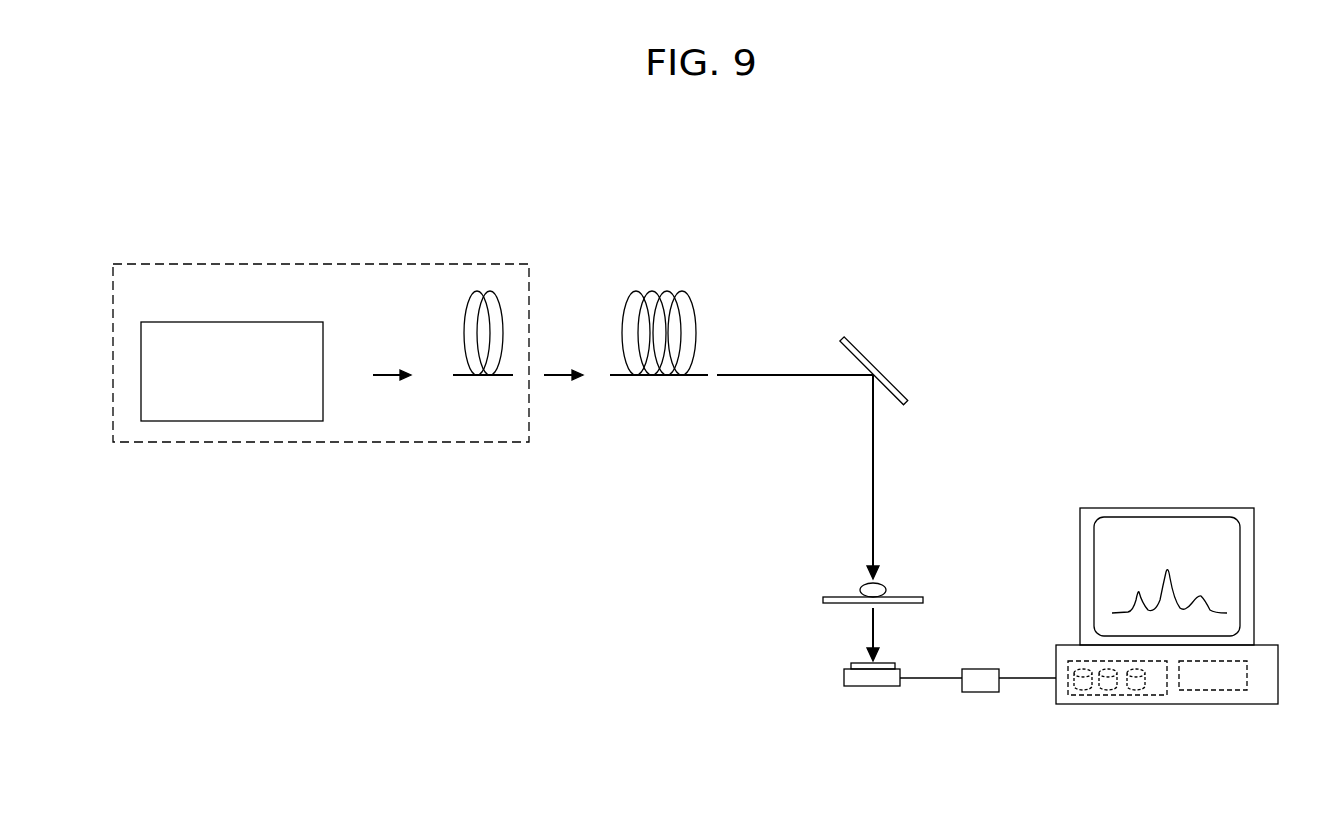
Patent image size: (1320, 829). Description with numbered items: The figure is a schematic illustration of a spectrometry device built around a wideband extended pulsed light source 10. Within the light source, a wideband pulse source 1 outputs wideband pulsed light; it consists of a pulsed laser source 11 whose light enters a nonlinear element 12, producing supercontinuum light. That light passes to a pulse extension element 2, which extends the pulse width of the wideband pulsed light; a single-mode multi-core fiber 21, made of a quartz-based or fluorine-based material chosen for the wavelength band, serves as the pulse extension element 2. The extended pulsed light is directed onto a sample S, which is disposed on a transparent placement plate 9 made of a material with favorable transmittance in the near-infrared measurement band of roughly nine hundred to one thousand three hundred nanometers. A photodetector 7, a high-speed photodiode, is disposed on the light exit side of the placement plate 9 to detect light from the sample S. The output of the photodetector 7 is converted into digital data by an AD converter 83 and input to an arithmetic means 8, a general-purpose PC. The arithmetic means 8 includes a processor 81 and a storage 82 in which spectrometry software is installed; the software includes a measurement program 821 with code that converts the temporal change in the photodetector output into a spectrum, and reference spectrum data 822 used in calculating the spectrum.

The wideband extended pulsed light source 10 is at (418, 512).
The wideband pulse source 1 is at (391, 263).
The pulsed laser source 11 is at (262, 322).
The nonlinear element 12 is at (493, 292).
The pulse extension element 2 is at (703, 212).
The multi-core fiber 21 is at (678, 293).
The sample S is at (885, 588).
The placement plate 9 is at (822, 600).
The photodetector 7 is at (843, 680).
The AD converter 83 is at (977, 693).
The arithmetic means 8 is at (1240, 473).
The processor 81 is at (1210, 692).
The storage 82 is at (1100, 695).
The measurement program 821 is at (1080, 693).
The reference spectrum data 822 is at (1107, 690).